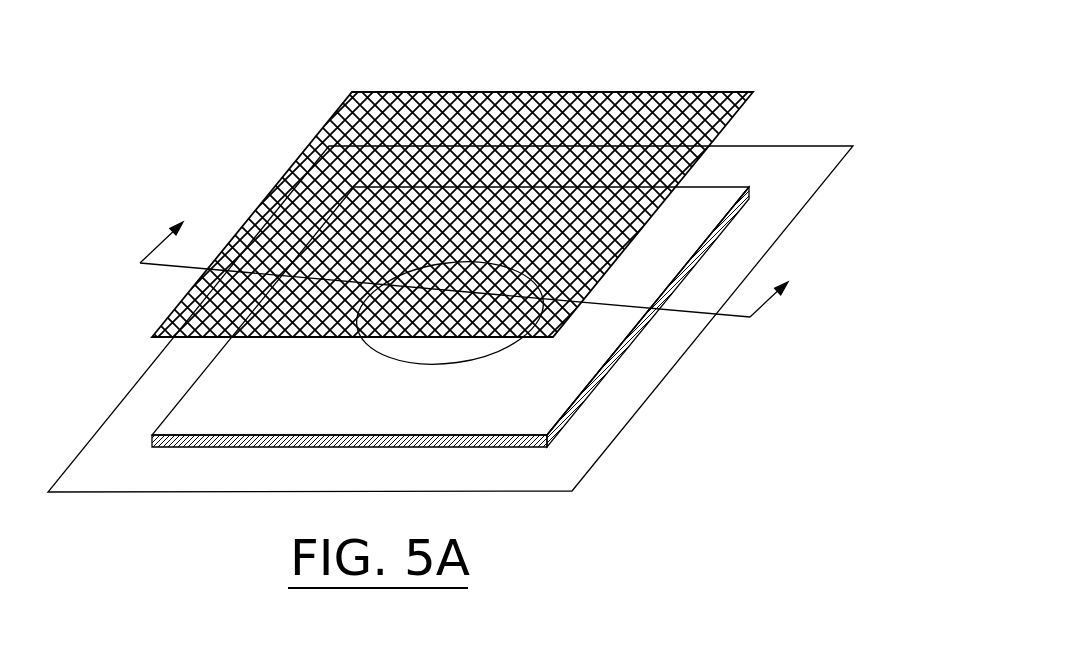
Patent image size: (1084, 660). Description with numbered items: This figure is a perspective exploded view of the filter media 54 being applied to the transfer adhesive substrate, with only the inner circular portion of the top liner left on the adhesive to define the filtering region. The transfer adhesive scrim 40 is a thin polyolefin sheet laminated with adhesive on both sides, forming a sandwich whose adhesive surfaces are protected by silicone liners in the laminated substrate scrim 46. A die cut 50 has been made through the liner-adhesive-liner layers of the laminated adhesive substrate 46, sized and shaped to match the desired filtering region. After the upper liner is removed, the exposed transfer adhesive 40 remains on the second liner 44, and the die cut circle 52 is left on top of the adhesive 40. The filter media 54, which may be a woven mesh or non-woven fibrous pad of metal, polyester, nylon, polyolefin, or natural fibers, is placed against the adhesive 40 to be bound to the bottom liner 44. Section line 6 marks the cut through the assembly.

The section line 6- 6 is at (469, 259).
The transfer adhesive scrim 40 is at (252, 415).
The second liner 44 is at (239, 479).
The laminated substrate scrim 46 is at (603, 338).
The die cut 50 is at (371, 347).
The die cut circle 52 is at (417, 360).
The filter media 54 is at (283, 178).